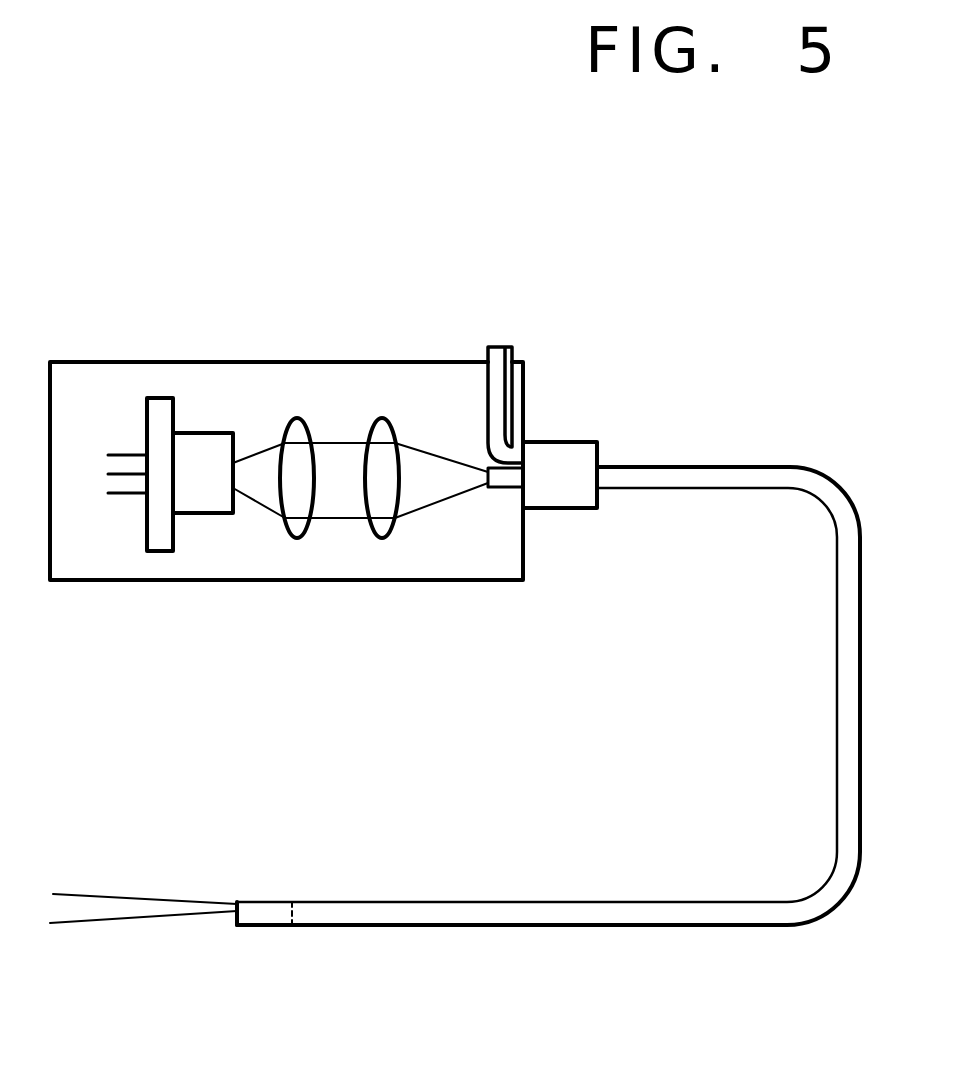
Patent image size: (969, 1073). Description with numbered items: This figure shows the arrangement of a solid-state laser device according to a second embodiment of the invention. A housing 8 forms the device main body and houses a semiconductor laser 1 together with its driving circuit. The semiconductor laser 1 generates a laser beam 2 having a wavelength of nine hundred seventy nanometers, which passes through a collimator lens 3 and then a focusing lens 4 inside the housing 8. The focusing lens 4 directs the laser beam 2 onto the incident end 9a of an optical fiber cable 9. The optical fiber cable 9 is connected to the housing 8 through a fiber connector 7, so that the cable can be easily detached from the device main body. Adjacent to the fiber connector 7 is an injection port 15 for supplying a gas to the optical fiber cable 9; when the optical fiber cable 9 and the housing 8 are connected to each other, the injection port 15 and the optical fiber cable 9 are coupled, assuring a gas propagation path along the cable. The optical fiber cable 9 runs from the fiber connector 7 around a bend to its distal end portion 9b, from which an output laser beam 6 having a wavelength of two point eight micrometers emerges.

The semiconductor laser 1 is at (157, 553).
The laser beam 2 is at (258, 482).
The collimator lens 3 is at (297, 538).
The focusing lens 4 is at (382, 538).
The output laser beam 6 is at (118, 913).
The fiber connector 7 is at (568, 437).
The housing 8 is at (143, 360).
The optical fiber cable 9 is at (837, 717).
The incident end 9a is at (486, 469).
The distal end portion 9b is at (257, 924).
The injection port 15 is at (498, 347).